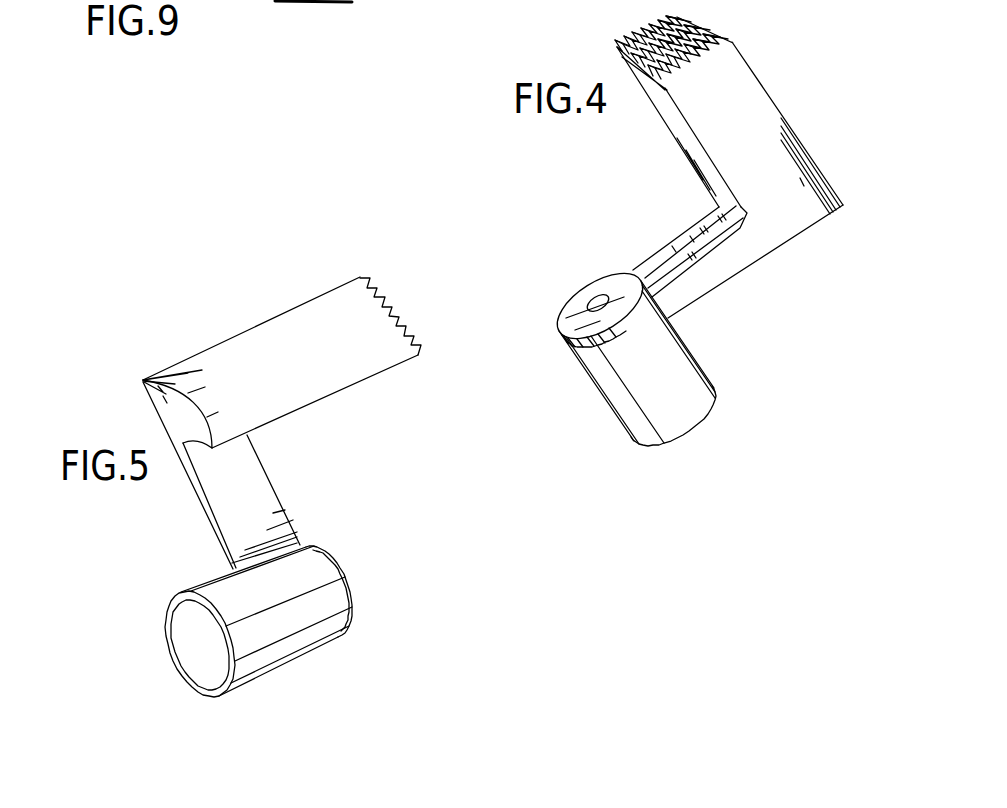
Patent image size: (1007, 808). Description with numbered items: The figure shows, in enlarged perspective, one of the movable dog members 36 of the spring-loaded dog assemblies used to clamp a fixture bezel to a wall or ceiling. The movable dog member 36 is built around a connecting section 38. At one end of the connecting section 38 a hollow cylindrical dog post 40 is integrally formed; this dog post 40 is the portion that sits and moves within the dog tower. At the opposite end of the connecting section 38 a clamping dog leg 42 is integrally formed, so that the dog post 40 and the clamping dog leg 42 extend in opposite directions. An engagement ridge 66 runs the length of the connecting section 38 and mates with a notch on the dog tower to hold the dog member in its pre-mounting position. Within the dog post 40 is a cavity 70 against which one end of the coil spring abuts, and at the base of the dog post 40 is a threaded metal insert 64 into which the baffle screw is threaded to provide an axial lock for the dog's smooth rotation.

In FIG. 4, the movable dog member 36 is at (835, 297).
In FIG. 5, the movable dog member 36 is at (410, 572).
In FIG. 4, the connecting section 38 is at (713, 285).
In FIG. 5, the connecting section 38 is at (277, 502).
In FIG. 4, the hollow cylindrical dog post 40 is at (622, 403).
In FIG. 5, the hollow cylindrical dog post 40 is at (293, 652).
In FIG. 4, the clamping dog leg 42 is at (753, 100).
In FIG. 5, the clamping dog leg 42 is at (312, 313).
In FIG. 4, the threaded metal insert 64 is at (598, 296).
In FIG. 4, the engagement ridge 66 is at (698, 240).
In FIG. 5, the cavity 70 is at (187, 643).